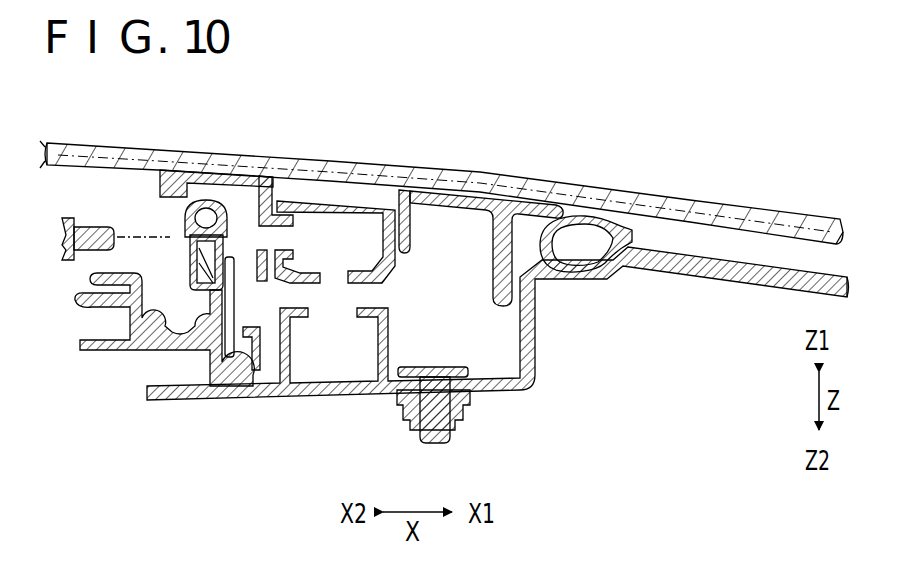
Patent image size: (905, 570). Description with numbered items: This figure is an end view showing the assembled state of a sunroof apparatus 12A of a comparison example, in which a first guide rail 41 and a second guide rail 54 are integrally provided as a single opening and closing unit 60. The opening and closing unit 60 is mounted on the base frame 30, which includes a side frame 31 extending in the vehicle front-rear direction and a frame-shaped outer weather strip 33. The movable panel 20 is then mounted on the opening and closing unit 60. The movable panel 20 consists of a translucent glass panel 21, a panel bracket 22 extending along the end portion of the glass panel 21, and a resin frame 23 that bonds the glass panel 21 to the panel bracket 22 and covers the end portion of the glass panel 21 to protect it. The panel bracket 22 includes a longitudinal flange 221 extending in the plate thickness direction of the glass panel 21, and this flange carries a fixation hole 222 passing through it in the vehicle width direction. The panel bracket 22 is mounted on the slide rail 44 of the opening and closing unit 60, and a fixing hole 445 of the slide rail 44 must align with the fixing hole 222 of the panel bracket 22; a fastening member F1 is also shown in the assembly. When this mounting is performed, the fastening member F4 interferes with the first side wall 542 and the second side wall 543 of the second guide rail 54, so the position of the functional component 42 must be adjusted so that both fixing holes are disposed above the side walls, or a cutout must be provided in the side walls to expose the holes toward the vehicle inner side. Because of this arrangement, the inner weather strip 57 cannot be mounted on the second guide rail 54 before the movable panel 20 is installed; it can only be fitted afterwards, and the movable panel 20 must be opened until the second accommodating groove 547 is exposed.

The sunroof apparatus 12A is at (613, 469).
The movable panel 20 is at (441, 192).
The glass panel 21 is at (690, 197).
The panel bracket 22 is at (282, 180).
The longitudinal flange 221 is at (412, 245).
The fixation hole 222 is at (258, 224).
The resin frame 23 is at (836, 217).
The base frame 30 is at (498, 353).
The side frame 31 is at (498, 353).
The outer weather strip 33 is at (557, 215).
The first guide rail 41 is at (270, 401).
The functional component 42 is at (420, 216).
The slide rail 44 is at (372, 201).
The fixing hole 445 is at (277, 252).
The second guide rail 54 is at (171, 319).
The first side wall 542 is at (229, 262).
The second side wall 543 is at (190, 247).
The second accommodating groove 547 is at (205, 288).
The inner weather strip 57 is at (185, 214).
The opening and closing unit 60 is at (498, 353).
The fastening member F1 is at (443, 366).
The fastening member F4 is at (60, 240).